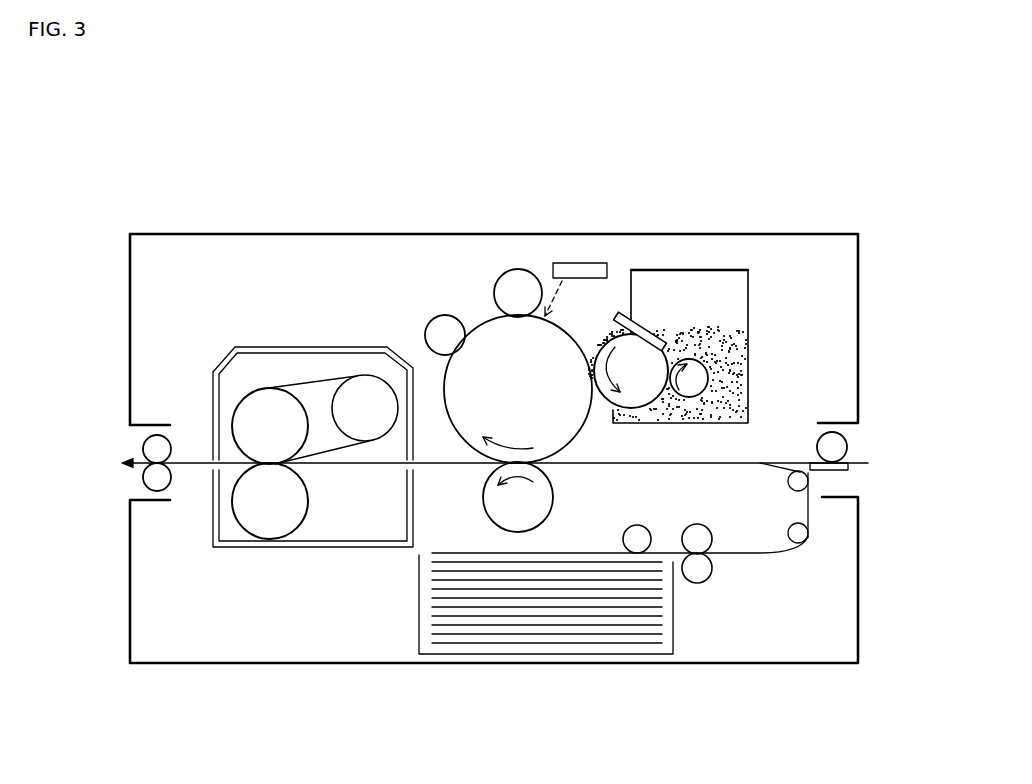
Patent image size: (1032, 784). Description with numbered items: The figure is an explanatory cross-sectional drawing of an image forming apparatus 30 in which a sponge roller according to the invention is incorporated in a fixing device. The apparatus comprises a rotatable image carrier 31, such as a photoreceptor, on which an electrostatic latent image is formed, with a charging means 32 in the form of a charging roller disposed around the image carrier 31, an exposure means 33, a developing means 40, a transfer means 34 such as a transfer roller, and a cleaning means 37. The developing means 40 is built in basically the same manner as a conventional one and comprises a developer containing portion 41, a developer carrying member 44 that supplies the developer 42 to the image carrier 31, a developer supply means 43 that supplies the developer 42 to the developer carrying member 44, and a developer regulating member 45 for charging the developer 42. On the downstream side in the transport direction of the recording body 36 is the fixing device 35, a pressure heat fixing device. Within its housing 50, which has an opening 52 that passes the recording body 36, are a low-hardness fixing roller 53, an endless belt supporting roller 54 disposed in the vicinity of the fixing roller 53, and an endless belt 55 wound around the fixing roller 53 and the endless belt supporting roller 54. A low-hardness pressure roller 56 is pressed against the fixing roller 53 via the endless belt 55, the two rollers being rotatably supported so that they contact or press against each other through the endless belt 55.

The image forming apparatus 30 is at (535, 175).
The image carrier 31 is at (497, 340).
The charging means 32 is at (522, 287).
The exposure means 33 is at (578, 272).
The transfer means 34 is at (517, 505).
The fixing device 35 is at (243, 311).
The recording body 36 is at (427, 596).
The cleaning means 37 is at (440, 330).
The developing means 40 is at (754, 294).
The developer containing portion 41 is at (718, 268).
The developer 42 is at (735, 368).
The developer supply means 43 is at (708, 392).
The developer carrying member 44 is at (668, 348).
The developer regulating member 45 is at (655, 368).
The housing 50 is at (213, 372).
The opening 52 is at (235, 569).
The fixing roller 53 is at (255, 420).
The endless belt supporting roller 54 is at (373, 400).
The endless belt 55 is at (299, 383).
The pressure roller 56 is at (270, 492).